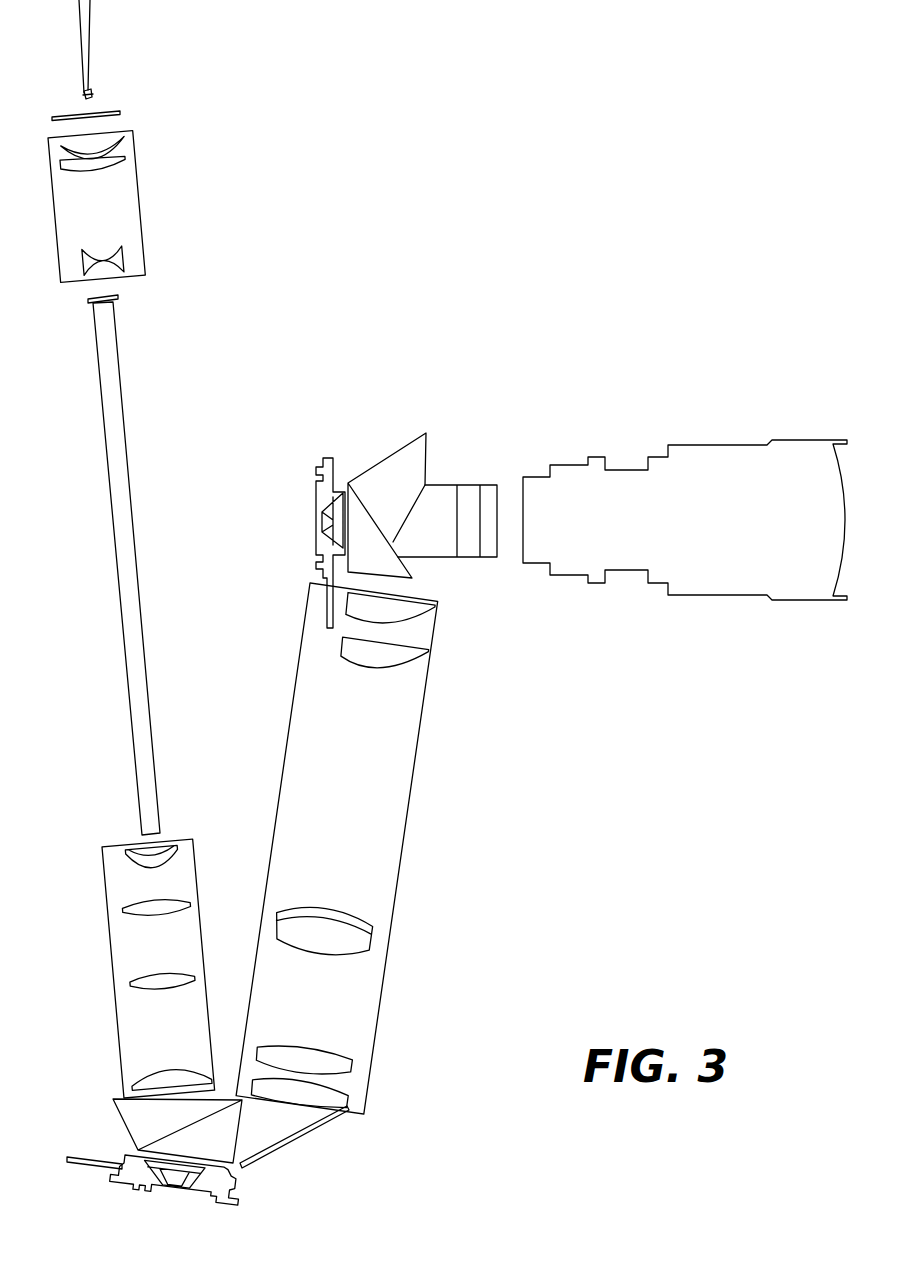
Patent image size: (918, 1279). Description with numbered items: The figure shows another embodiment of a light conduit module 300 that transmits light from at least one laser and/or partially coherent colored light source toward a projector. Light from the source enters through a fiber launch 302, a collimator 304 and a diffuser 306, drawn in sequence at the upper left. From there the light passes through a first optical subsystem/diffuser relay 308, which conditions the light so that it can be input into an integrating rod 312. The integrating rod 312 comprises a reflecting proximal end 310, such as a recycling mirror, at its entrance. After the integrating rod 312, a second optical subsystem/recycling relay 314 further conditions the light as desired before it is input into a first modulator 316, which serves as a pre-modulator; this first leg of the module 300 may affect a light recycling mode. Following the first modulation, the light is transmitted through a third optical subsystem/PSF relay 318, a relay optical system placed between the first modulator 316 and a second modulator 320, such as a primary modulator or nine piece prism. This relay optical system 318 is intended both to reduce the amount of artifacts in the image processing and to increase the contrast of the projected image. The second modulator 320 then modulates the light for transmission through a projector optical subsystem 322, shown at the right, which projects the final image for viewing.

The light conduit module 300 is at (647, 85).
The fiber launch 302 is at (88, 43).
The collimator 304 is at (93, 96).
The diffuser 306 is at (121, 112).
The first optical subsystem/diffuser relay 308 is at (148, 248).
The reflecting proximal end 310 is at (118, 299).
The integrating rod 312 is at (123, 407).
The second optical subsystem/recycling relay 314 is at (118, 1012).
The first modulator 316 is at (118, 1110).
The third optical subsystem/PSF relay 318 is at (391, 945).
The second modulator 320 is at (428, 457).
The projector optical subsystem 322 is at (694, 442).